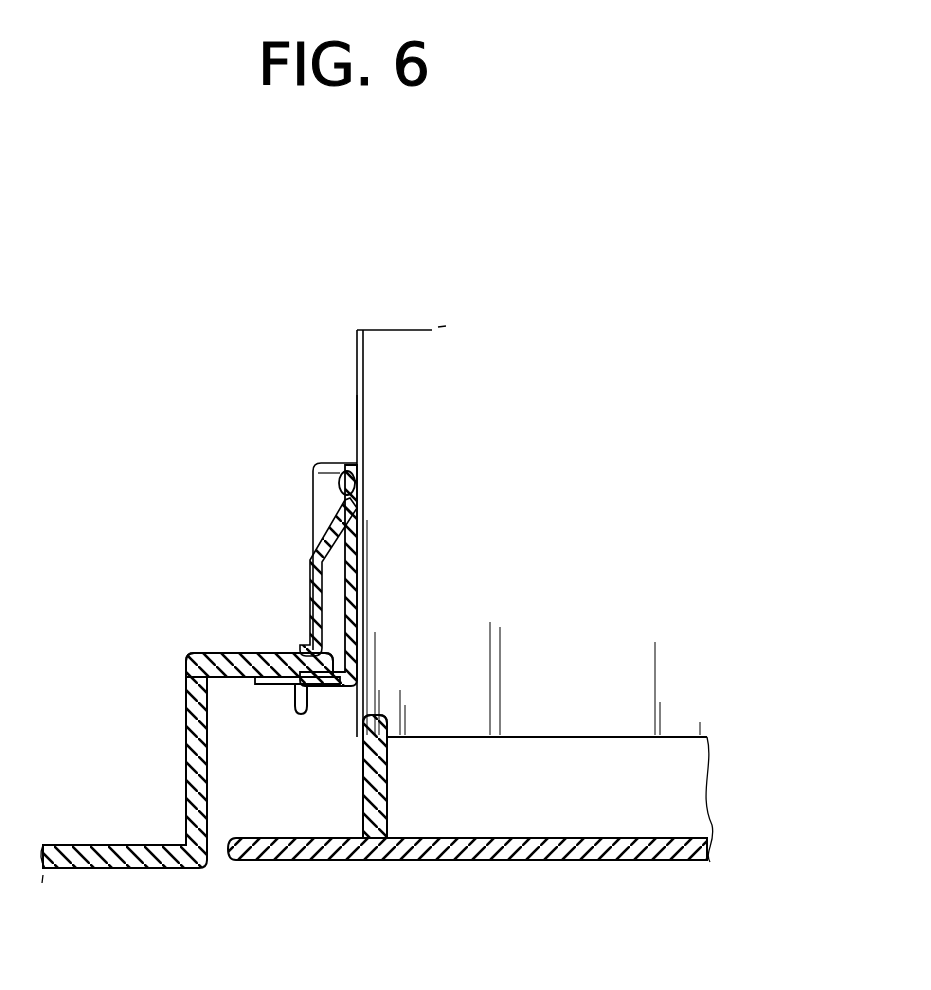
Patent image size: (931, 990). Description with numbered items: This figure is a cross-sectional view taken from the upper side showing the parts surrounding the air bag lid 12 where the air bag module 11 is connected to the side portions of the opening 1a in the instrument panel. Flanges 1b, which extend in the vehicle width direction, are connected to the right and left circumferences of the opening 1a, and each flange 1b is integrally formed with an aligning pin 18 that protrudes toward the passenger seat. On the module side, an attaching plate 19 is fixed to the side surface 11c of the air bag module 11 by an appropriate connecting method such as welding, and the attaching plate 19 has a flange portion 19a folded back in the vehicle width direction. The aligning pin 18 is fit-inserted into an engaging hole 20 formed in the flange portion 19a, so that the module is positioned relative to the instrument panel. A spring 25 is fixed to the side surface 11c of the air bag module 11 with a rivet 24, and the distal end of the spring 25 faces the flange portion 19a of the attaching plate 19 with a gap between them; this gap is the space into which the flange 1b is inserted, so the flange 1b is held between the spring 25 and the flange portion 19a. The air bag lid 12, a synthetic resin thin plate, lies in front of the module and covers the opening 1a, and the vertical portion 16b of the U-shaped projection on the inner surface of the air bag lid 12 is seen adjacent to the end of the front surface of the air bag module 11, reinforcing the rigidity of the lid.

The opening 1a is at (268, 762).
The flange 1b is at (232, 665).
The air bag module 11 is at (413, 348).
The side surface 11c is at (356, 412).
The air bag lid 12 is at (628, 848).
The vertical portion 16b is at (365, 795).
The aligning pin 18 is at (340, 708).
The attaching plate 19 is at (360, 600).
The flange portion 19a is at (300, 688).
The engaging hole 20 is at (290, 705).
The rivet 24 is at (345, 482).
The spring 25 is at (325, 548).